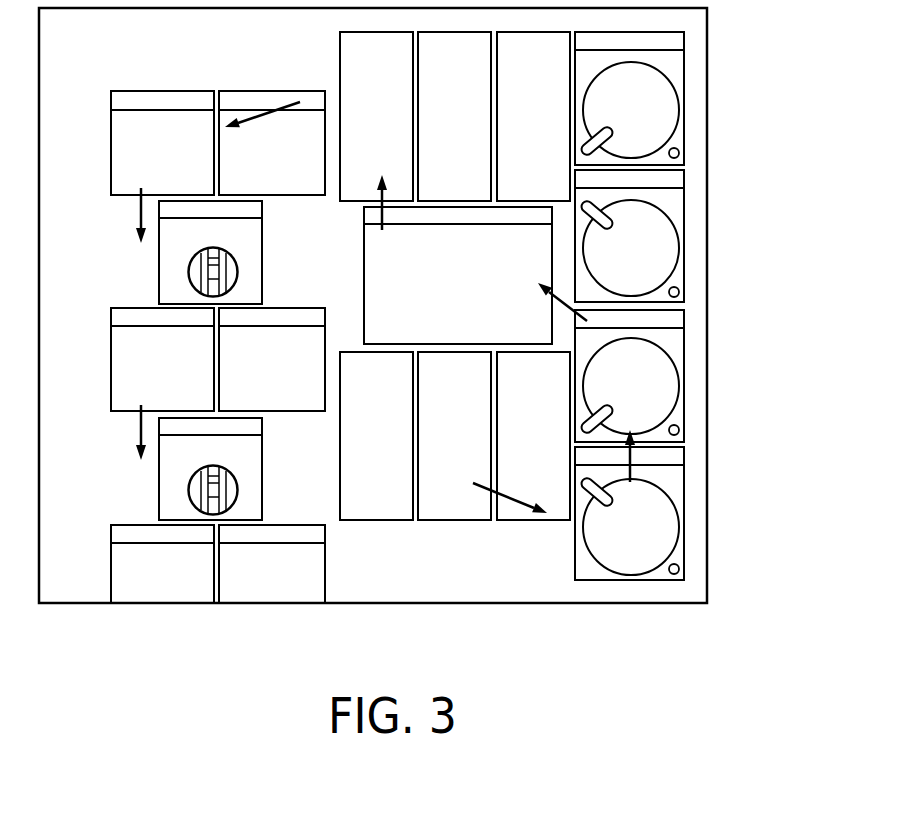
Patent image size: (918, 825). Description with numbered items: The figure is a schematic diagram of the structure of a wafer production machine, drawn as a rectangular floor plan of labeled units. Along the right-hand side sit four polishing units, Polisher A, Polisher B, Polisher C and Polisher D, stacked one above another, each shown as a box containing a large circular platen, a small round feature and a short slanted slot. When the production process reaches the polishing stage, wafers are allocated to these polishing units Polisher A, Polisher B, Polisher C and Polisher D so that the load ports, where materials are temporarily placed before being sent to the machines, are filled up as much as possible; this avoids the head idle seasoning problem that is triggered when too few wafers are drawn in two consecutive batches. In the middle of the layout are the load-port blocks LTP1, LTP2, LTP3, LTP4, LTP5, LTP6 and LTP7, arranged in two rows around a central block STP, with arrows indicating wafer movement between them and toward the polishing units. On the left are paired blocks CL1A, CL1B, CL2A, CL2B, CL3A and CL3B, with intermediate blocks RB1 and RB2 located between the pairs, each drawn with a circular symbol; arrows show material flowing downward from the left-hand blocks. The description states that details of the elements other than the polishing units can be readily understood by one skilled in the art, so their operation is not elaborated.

The cleaning unit CL1A is at (272, 143).
The cleaning unit CL1B is at (162, 143).
The cleaning unit CL2A is at (272, 359).
The cleaning unit CL2B is at (162, 359).
The cleaning unit CL3A is at (272, 564).
The cleaning unit CL3B is at (162, 564).
The robot RB1 is at (210, 252).
The robot RB2 is at (210, 469).
The load/transfer port LTP1 is at (487, 476).
The load/transfer port LTP2 is at (454, 436).
The load/transfer port LTP3 is at (533, 436).
The load/transfer port LTP4 is at (376, 436).
The load/transfer port LTP5 is at (533, 116).
The load/transfer port LTP6 is at (454, 116).
The load/transfer port LTP7 is at (376, 116).
The staging/transfer platform STP is at (458, 275).
The polishing unit Polisher A is at (678, 477).
The polishing unit Polisher B is at (678, 340).
The polishing unit Polisher C is at (678, 200).
The polishing unit Polisher D is at (678, 62).